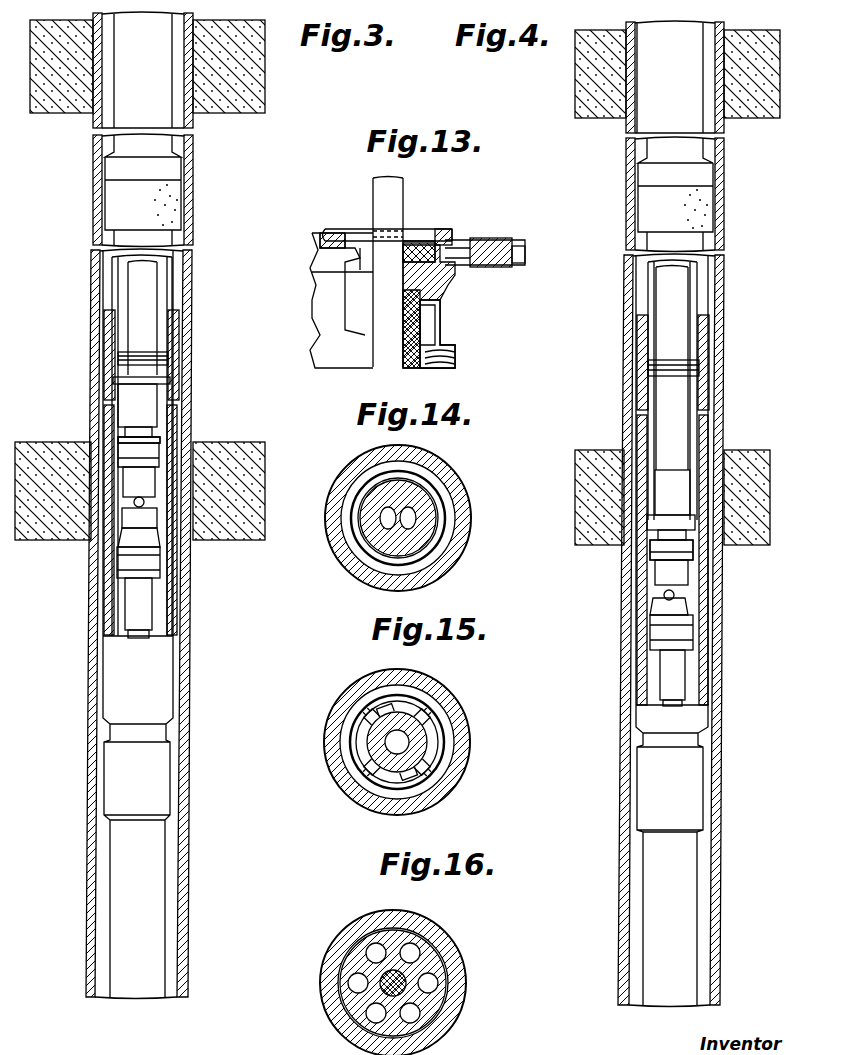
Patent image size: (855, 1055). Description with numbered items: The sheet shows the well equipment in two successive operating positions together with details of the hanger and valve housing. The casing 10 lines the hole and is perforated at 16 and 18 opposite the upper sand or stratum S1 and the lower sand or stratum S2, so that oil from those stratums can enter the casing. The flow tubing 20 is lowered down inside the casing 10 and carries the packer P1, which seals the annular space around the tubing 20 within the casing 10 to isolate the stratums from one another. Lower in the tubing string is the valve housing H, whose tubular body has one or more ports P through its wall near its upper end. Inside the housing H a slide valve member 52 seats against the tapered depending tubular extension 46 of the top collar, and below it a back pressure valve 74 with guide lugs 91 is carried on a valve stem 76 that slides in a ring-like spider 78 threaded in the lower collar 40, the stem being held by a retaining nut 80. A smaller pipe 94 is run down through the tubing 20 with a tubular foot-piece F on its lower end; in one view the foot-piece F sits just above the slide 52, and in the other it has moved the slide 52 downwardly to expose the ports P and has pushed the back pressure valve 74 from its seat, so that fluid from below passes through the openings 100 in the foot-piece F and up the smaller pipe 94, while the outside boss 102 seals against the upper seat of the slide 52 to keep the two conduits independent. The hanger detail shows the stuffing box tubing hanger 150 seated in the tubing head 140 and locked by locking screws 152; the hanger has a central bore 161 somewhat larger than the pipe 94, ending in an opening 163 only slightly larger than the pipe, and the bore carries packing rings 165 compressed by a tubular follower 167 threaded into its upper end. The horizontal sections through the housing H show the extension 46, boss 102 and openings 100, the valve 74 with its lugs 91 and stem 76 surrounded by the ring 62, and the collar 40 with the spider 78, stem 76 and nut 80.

In FIG. 3, the casing perforations 16 is at (88, 107).
In FIG. 4, the casing perforations 16 is at (728, 70).
In FIG. 3, the flow tubing 20 is at (131, 121).
In FIG. 4, the flow tubing 20 is at (666, 120).
In FIG. 3, the upper sand or stratum S1 is at (236, 105).
In FIG. 4, the upper sand or stratum S1 is at (758, 112).
In FIG. 3, the packer P1 is at (167, 207).
In FIG. 4, the packer P1 is at (714, 212).
In FIG. 3, the smaller pipe 94 is at (148, 297).
In FIG. 4, the smaller pipe 94 is at (677, 312).
In FIG. 13, the smaller pipe 94 is at (396, 205).
In FIG. 3, the casing 10 is at (183, 387).
In FIG. 4, the casing 10 is at (716, 362).
In FIG. 3, the tubular foot-piece F is at (150, 455).
In FIG. 4, the tubular foot-piece F is at (700, 590).
In FIG. 14, the tubular foot-piece F is at (422, 490).
In FIG. 3, the slide valve member 52 is at (178, 470).
In FIG. 4, the slide valve member 52 is at (645, 584).
In FIG. 3, the ports P is at (82, 475).
In FIG. 4, the ports P is at (612, 478).
In FIG. 3, the casing perforations 18 is at (107, 512).
In FIG. 4, the casing perforations 18 is at (722, 474).
In FIG. 3, the openings 100 is at (142, 512).
In FIG. 4, the openings 100 is at (674, 600).
In FIG. 14, the openings 100 is at (372, 534).
In FIG. 3, the sand or stratum S2 is at (255, 530).
In FIG. 4, the sand or stratum S2 is at (740, 538).
In FIG. 3, the back pressure valve 74 is at (160, 520).
In FIG. 4, the back pressure valve 74 is at (668, 608).
In FIG. 15, the back pressure valve 74 is at (360, 737).
In FIG. 3, the valve housing H is at (170, 640).
In FIG. 4, the valve housing H is at (698, 718).
In FIG. 14, the valve housing H is at (455, 555).
In FIG. 15, the valve housing H is at (455, 710).
In FIG. 13, the tubing head 140 is at (348, 318).
In FIG. 13, the tubular follower 167 is at (447, 243).
In FIG. 13, the locking screws 152 is at (468, 270).
In FIG. 13, the stuffing box tubing hanger 150 is at (416, 286).
In FIG. 13, the central bore 161 is at (413, 333).
In FIG. 13, the packing rings 165 is at (410, 330).
In FIG. 13, the opening 163 is at (414, 357).
In FIG. 14, the tapered depending tubular extension 46 is at (355, 495).
In FIG. 14, the outside boss 102 is at (434, 512).
In FIG. 15, the guide lugs 91 is at (362, 706).
In FIG. 15, the valve stem 76 is at (380, 748).
In FIG. 16, the valve stem 76 is at (350, 1005).
In FIG. 15, the ring 62 is at (444, 750).
In FIG. 16, the lower collar 40 is at (450, 952).
In FIG. 16, the ring-like spider 78 is at (436, 1000).
In FIG. 16, the retaining nut 80 is at (358, 1022).